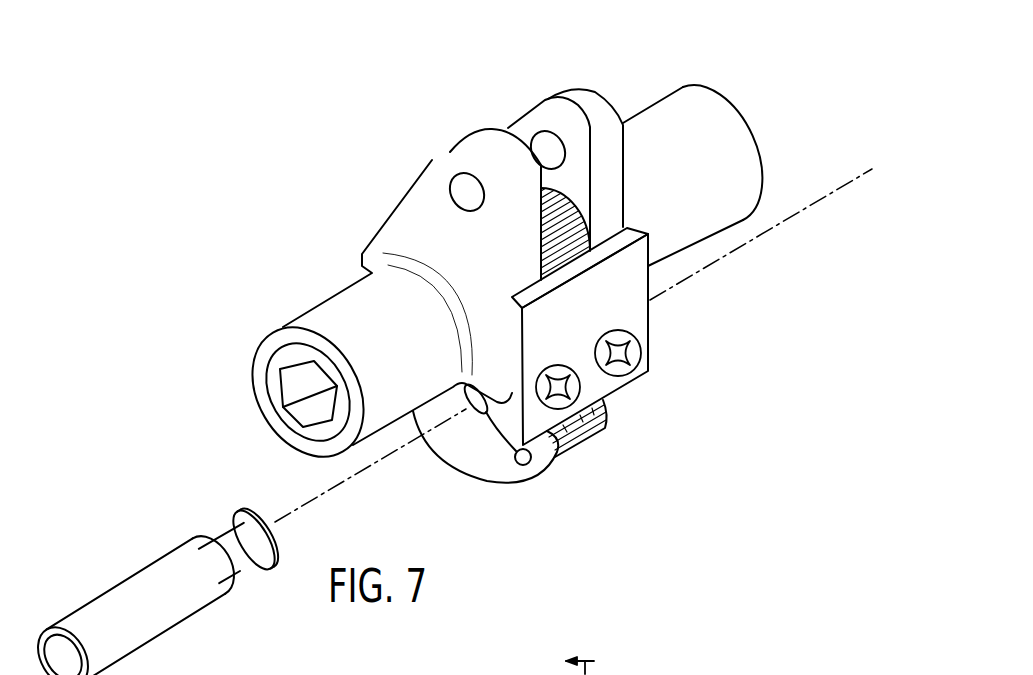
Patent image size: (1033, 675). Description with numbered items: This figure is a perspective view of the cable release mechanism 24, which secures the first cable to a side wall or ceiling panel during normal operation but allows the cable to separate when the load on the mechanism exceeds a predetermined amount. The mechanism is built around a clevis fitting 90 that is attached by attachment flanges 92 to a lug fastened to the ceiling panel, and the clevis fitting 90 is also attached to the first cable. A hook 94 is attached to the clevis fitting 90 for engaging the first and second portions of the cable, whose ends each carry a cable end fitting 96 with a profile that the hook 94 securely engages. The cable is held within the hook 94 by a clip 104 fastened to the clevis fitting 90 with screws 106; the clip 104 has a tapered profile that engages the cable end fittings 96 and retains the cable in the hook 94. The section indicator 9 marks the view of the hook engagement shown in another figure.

The cable release mechanism 24 is at (743, 80).
The clevis fitting 90 is at (396, 204).
The attachment flanges 92 is at (498, 113).
The hook 94 is at (547, 473).
The cable end fitting 96 is at (167, 601).
The clip 104 is at (638, 321).
The screws 106 is at (641, 356).
The section view indicator for FIG. 9 is at (570, 665).